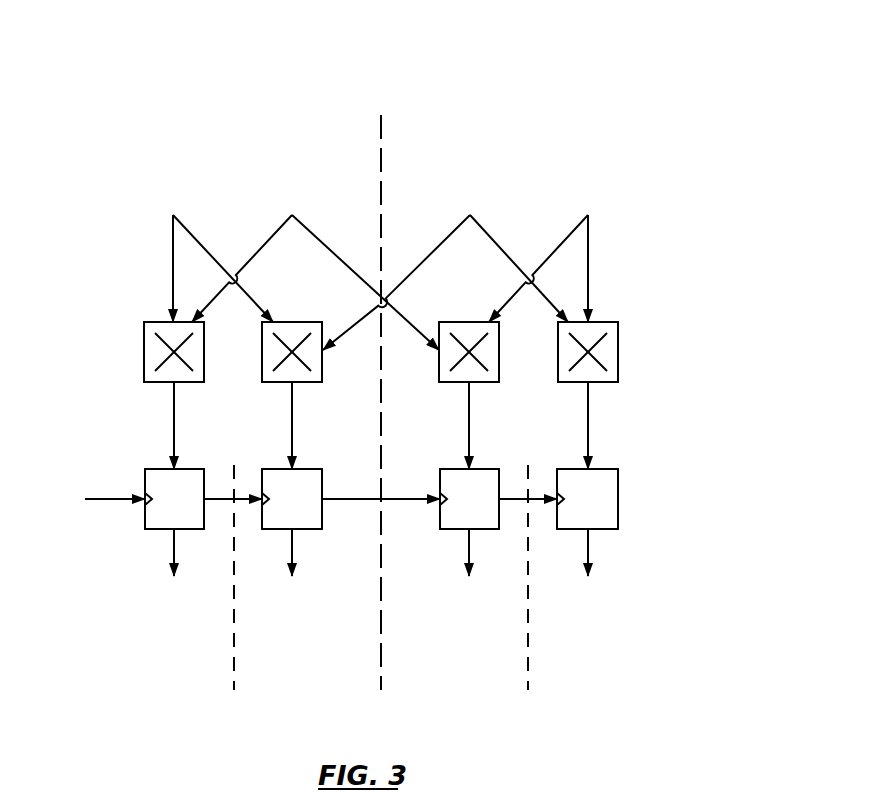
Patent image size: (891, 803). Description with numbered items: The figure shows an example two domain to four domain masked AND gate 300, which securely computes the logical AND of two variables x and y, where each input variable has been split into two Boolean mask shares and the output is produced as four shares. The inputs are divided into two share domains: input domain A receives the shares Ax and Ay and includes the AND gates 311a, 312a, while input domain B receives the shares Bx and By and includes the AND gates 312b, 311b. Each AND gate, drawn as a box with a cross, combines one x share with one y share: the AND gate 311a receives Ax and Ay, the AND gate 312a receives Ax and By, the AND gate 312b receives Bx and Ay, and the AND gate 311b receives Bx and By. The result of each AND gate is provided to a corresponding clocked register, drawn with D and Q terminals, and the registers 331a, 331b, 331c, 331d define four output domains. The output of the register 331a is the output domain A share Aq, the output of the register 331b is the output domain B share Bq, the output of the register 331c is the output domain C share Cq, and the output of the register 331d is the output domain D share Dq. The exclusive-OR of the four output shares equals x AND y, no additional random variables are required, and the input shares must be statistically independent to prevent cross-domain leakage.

The two domain to four domain masked AND gate 300 is at (798, 84).
The AND gate 311a is at (163, 383).
The AND gate 312a is at (282, 383).
The AND gate 312b is at (480, 383).
The AND gate 311b is at (600, 383).
The register 331a is at (160, 530).
The register 331b is at (304, 530).
The register 331c is at (452, 530).
The register 331d is at (600, 530).